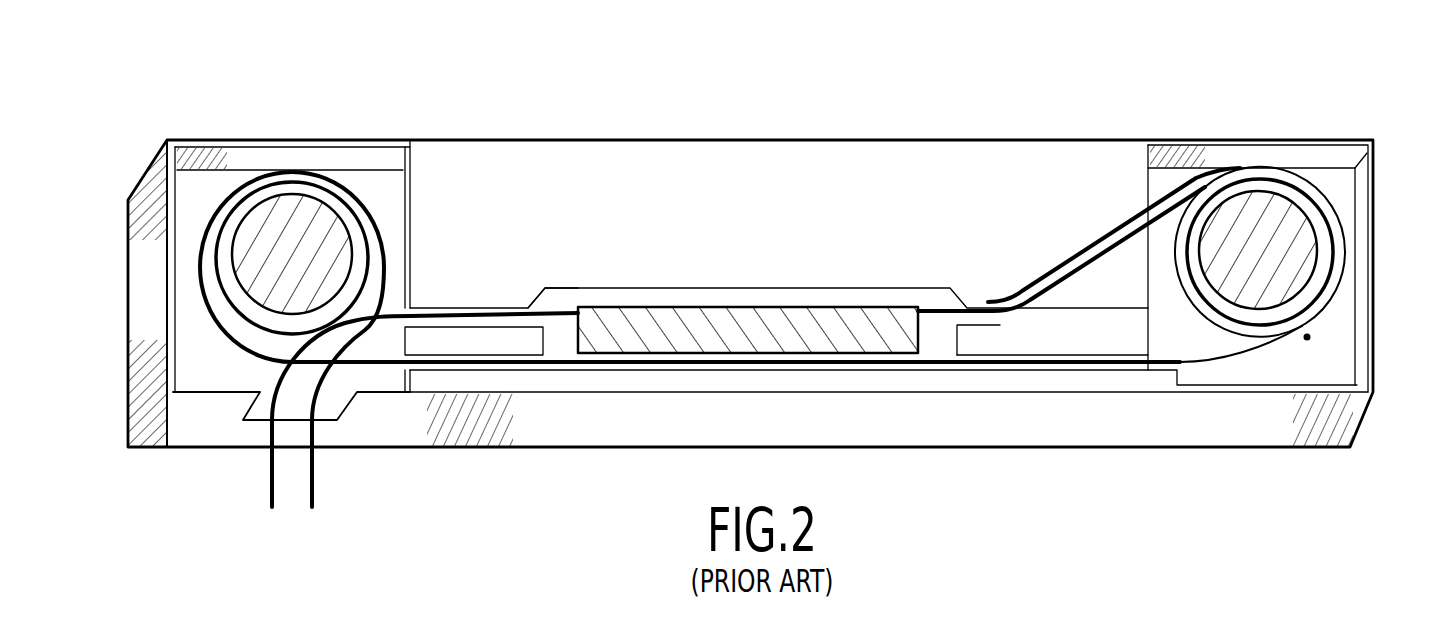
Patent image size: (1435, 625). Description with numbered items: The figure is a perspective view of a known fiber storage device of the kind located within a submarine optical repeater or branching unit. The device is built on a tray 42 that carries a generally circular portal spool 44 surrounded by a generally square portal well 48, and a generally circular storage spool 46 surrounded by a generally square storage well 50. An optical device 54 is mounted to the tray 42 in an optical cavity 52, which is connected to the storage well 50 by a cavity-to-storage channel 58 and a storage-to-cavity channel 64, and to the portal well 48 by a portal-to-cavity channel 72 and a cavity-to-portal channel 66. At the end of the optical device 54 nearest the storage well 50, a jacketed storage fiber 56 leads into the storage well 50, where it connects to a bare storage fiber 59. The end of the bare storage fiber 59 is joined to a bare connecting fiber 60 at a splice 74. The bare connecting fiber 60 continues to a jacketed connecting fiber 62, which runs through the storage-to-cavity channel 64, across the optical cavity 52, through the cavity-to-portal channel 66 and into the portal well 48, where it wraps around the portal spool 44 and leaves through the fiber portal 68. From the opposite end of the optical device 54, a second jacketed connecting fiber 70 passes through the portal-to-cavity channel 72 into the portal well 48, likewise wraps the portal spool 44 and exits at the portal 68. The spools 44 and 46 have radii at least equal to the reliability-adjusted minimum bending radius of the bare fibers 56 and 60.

The tray 42 is at (695, 139).
The portal spool 44 is at (272, 298).
The storage spool 46 is at (1287, 249).
The portal well 48 is at (228, 160).
The storage well 50 is at (1343, 201).
The optical cavity 52 is at (860, 296).
The optical device 54 is at (755, 305).
The jacketed storage fiber 56 is at (992, 307).
The cavity-to-storage channel 58 is at (977, 306).
The bare storage fiber 59 is at (1342, 300).
The bare connecting fiber 60 is at (1240, 362).
The jacketed connecting fiber 62 is at (1105, 366).
The storage-to-cavity channel 64 is at (1005, 365).
The cavity-to-portal channel 66 is at (517, 376).
The fiber portal 68 is at (325, 420).
The jacketed connecting fiber 70 is at (562, 308).
The portal-to-cavity channel 72 is at (453, 308).
The splice 74 is at (1307, 337).